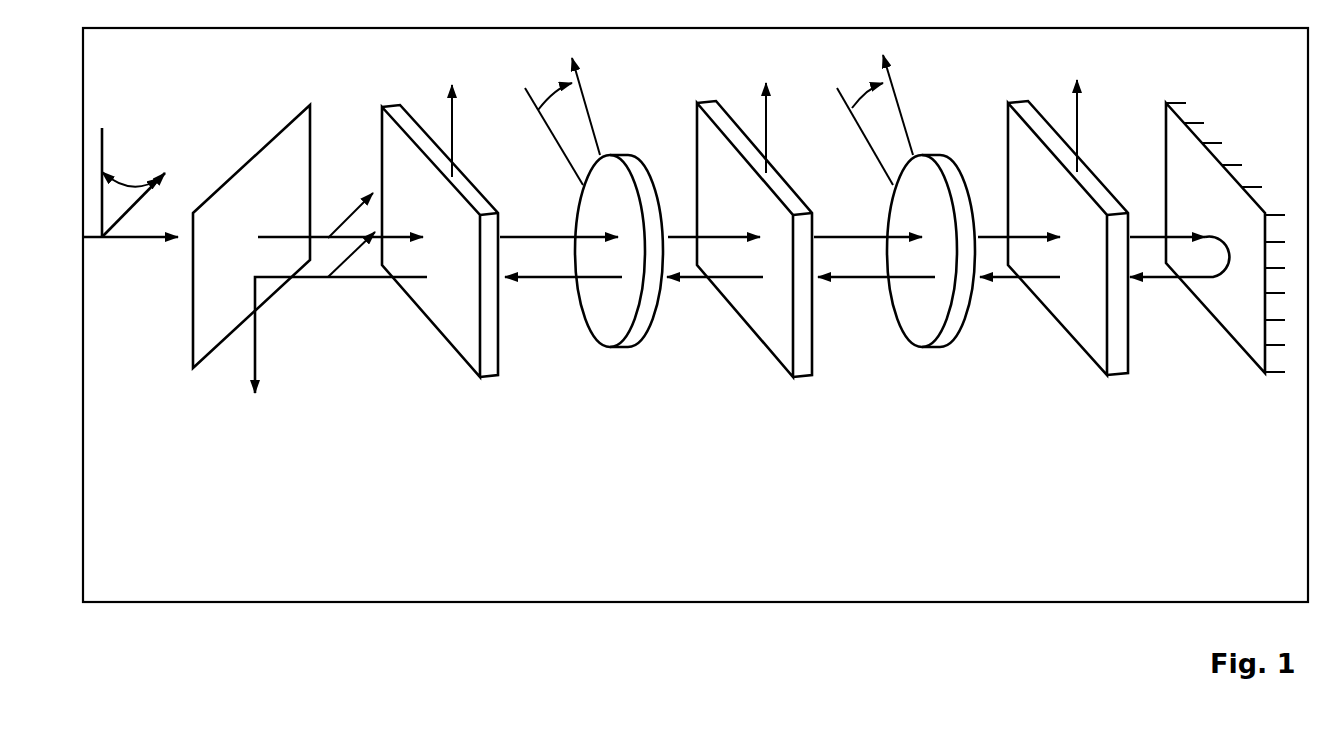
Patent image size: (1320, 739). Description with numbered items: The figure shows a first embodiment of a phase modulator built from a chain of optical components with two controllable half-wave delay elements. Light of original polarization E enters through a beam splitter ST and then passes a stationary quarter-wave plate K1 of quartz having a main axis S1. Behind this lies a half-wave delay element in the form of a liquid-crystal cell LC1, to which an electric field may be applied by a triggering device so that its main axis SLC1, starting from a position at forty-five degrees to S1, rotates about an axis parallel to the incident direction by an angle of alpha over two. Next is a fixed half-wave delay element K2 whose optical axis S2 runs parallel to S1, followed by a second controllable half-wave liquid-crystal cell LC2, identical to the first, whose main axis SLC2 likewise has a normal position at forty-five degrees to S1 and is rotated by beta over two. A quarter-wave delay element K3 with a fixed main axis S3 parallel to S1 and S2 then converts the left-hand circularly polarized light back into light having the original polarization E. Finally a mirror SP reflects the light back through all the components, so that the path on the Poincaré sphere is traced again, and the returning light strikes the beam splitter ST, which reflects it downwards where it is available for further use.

The beam splitter ST is at (251, 220).
The λ/4 plate K1 is at (447, 309).
The liquid-crystal cell LC1 is at (628, 334).
The λ/2 delay element K2 is at (762, 307).
The liquid-crystal cell LC2 is at (939, 334).
The λ/4 delay element K3 is at (1074, 307).
The mirror SP is at (1225, 223).
The main axis S1 is at (476, 124).
The optical axis S2 is at (790, 122).
The main axis S3 is at (1101, 121).
The main axis SLC1 is at (583, 117).
The main axis SLC2 is at (895, 117).
The original polarization E is at (229, 199).